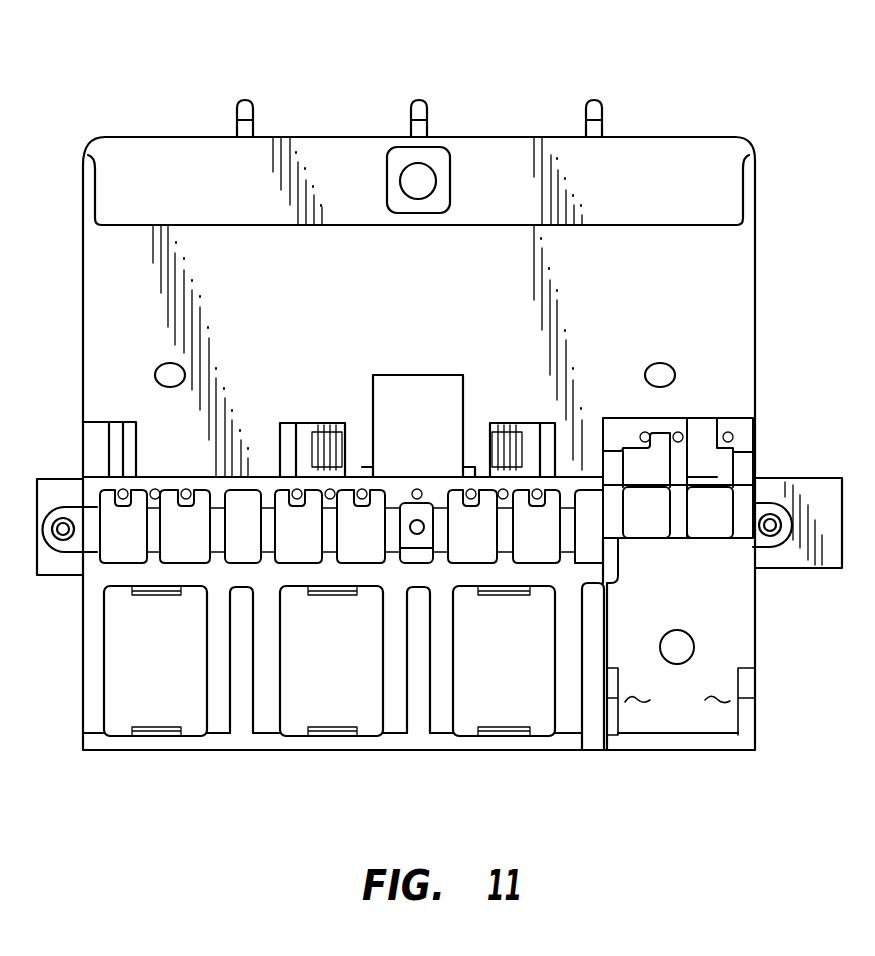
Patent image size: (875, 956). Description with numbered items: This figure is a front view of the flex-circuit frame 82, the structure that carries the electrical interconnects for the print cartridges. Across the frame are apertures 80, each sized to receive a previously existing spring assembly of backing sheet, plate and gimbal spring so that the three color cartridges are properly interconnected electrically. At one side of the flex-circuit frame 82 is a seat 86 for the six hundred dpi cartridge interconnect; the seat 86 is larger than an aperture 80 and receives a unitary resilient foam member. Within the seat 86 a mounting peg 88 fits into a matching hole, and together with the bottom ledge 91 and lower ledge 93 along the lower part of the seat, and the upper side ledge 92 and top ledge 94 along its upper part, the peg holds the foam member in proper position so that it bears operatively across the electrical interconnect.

The flex-circuit frame 82 is at (632, 278).
The apertures 80 is at (143, 653).
The seat 86 is at (717, 615).
The mounting peg 88 is at (680, 650).
The bottom ledge 91 is at (693, 727).
The upper side ledge 92 is at (618, 565).
The lower ledge 93 is at (677, 700).
The top ledge 94 is at (718, 545).